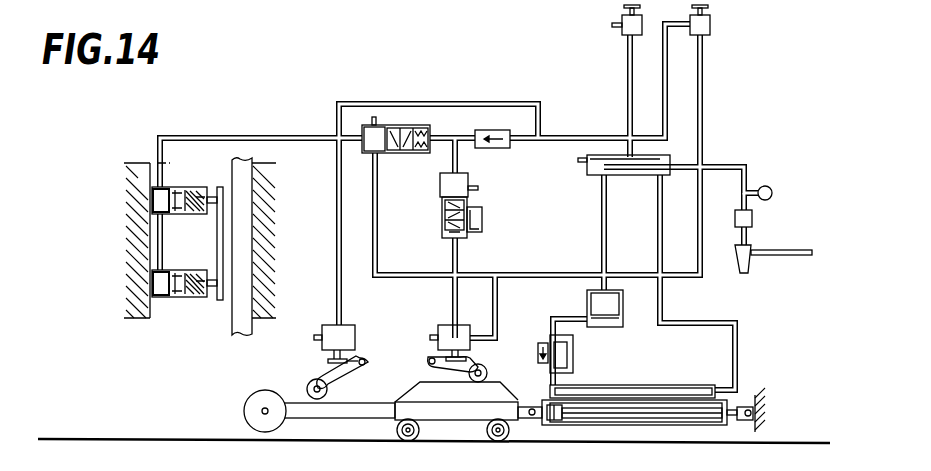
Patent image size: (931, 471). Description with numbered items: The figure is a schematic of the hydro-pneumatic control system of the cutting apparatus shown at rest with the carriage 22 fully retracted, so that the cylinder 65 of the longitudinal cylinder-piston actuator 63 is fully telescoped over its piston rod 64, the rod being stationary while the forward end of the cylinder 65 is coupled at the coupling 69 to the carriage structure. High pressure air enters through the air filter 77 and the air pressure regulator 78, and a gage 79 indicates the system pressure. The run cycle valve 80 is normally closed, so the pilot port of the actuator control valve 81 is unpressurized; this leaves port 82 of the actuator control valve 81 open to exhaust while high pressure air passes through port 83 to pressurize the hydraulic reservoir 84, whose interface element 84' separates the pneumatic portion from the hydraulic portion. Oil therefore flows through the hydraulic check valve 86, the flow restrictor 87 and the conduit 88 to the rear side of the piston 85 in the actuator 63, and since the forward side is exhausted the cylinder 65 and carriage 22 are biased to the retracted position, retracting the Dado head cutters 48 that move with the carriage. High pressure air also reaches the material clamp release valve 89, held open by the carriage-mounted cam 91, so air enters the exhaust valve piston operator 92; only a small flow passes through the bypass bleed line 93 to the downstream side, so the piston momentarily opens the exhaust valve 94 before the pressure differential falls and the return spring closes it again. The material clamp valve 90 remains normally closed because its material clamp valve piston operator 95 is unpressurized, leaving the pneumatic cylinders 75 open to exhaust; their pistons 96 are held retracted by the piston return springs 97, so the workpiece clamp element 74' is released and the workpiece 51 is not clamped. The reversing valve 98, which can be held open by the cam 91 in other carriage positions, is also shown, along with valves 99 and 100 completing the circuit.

The carriage 22 is at (449, 412).
The Dado head cutters 48 is at (251, 403).
The workpiece 51 is at (247, 276).
The cylinder-piston actuator 63 is at (657, 400).
The piston rod 64 is at (585, 420).
The cylinder 65 is at (602, 426).
The coupling 69 is at (535, 404).
The workpiece clamp element 74' is at (254, 243).
The pneumatic cylinders 75 is at (197, 205).
The air filter 77 is at (752, 260).
The air pressure regulator 78 is at (752, 220).
The gage 79 is at (772, 188).
The run cycle valve 80 is at (710, 26).
The actuator control valve 81 is at (674, 155).
The port 82 is at (661, 177).
The port 83 is at (601, 177).
The hydraulic reservoir 84 is at (643, 337).
The interface element 84' is at (584, 308).
The piston 85 is at (557, 422).
The hydraulic check valve 86 is at (542, 343).
The flow restrictor 87 is at (574, 355).
The conduit 88 is at (708, 382).
The material clamp release valve 89 is at (447, 325).
The material clamp valve 90 is at (383, 147).
The cam 91 is at (418, 387).
The exhaust valve piston operator 92 is at (441, 238).
The bypass bleed line 93 is at (483, 224).
The exhaust valve 94 is at (462, 183).
The material clamp valve piston operator 95 is at (417, 125).
The pistons 96 is at (175, 197).
The piston return springs 97 is at (198, 215).
The reversing valve 98 is at (352, 325).
The check valve 99 is at (500, 130).
The valve 100 is at (623, 30).